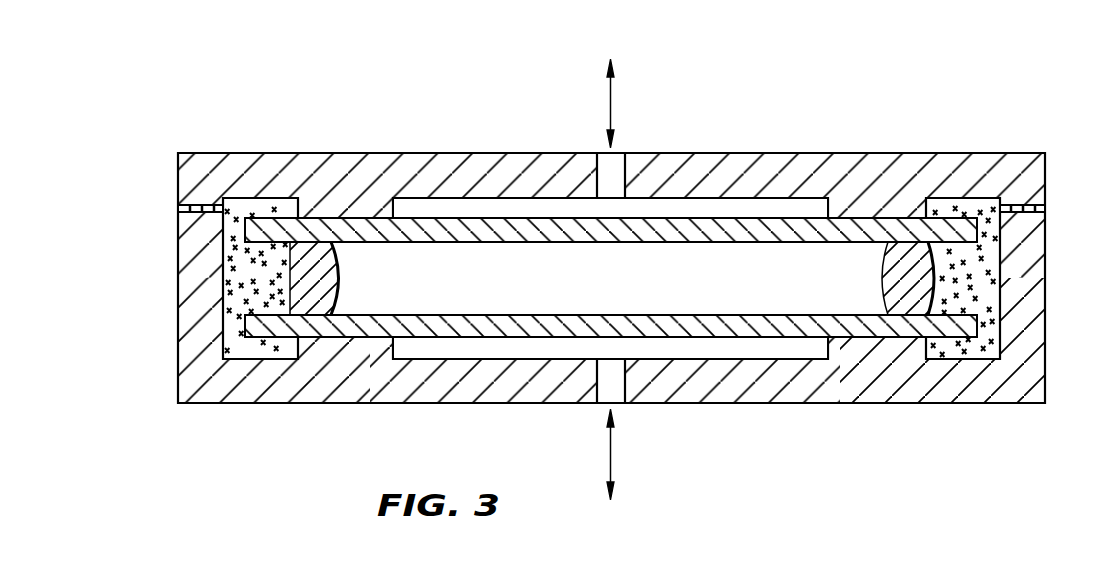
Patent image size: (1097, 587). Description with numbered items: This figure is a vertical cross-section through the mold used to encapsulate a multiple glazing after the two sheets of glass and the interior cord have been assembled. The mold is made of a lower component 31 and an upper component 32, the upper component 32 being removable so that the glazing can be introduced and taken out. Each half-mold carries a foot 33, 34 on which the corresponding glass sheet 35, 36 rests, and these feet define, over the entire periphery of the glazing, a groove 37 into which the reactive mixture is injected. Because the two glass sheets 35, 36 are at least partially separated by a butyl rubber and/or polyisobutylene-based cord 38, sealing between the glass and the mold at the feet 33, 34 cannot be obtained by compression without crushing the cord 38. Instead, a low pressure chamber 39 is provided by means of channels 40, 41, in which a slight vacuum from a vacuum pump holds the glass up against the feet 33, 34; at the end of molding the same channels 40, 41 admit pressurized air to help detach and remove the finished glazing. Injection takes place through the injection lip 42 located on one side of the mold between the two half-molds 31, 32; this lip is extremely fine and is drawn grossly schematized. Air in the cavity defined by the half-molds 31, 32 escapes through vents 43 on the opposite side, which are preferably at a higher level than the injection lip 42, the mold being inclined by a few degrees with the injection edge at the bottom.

The lower component 31 is at (344, 398).
The upper component 32 is at (338, 165).
The foot 33 is at (312, 347).
The foot 34 is at (380, 208).
The glass sheet 35 is at (523, 332).
The glass sheet 36 is at (492, 230).
The groove 37 is at (985, 278).
The butyl rubber and/or polyisobutylene-based cord 38 is at (892, 281).
The low pressure chamber 39 is at (743, 350).
The channel 40 is at (622, 150).
The channel 41 is at (622, 387).
The injection lip 42 is at (178, 208).
The vents 43 is at (1045, 208).